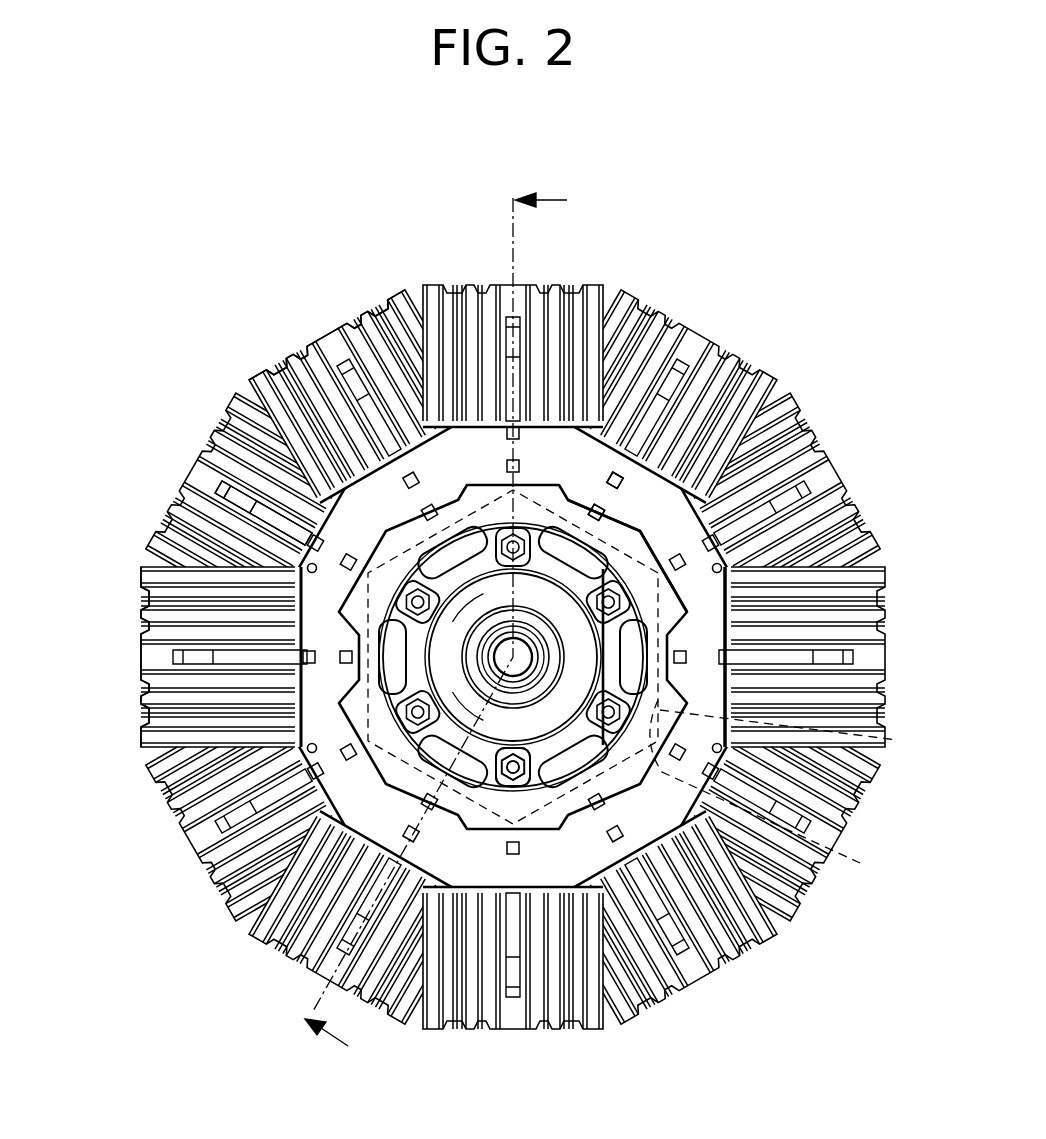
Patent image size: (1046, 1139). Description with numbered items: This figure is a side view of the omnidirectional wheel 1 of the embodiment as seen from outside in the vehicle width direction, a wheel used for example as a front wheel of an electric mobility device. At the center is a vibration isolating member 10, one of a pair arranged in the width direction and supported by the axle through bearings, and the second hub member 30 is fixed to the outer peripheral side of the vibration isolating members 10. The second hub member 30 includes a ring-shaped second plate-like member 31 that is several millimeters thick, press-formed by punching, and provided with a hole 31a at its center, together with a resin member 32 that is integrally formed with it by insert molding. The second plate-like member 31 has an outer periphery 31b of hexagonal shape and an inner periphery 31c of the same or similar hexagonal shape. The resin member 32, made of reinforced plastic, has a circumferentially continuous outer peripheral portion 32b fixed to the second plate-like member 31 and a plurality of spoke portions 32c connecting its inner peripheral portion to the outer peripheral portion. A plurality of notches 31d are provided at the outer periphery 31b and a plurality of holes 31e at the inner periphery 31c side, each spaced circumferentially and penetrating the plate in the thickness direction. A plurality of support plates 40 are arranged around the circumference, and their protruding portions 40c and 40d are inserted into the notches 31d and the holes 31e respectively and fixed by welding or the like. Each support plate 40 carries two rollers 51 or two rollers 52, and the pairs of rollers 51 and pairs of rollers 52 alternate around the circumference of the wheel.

The omnidirectional wheel 1 is at (502, 621).
The vibration isolating member 10 is at (580, 657).
The second hub member 30 is at (555, 852).
The second plate-like member 31 is at (678, 793).
The hole 31a is at (782, 790).
The outer periphery 31b is at (727, 577).
The inner periphery 31c is at (805, 731).
The notch 31d is at (622, 475).
The hole 31e is at (606, 496).
The resin member 32 is at (383, 767).
The outer peripheral portion 32b is at (640, 550).
The spoke portion 32c is at (488, 770).
The support plate 40 is at (630, 470).
The protruding portion 40c is at (512, 462).
The protruding portion 40d is at (505, 433).
The roller 51 is at (240, 404).
The roller 52 is at (342, 326).